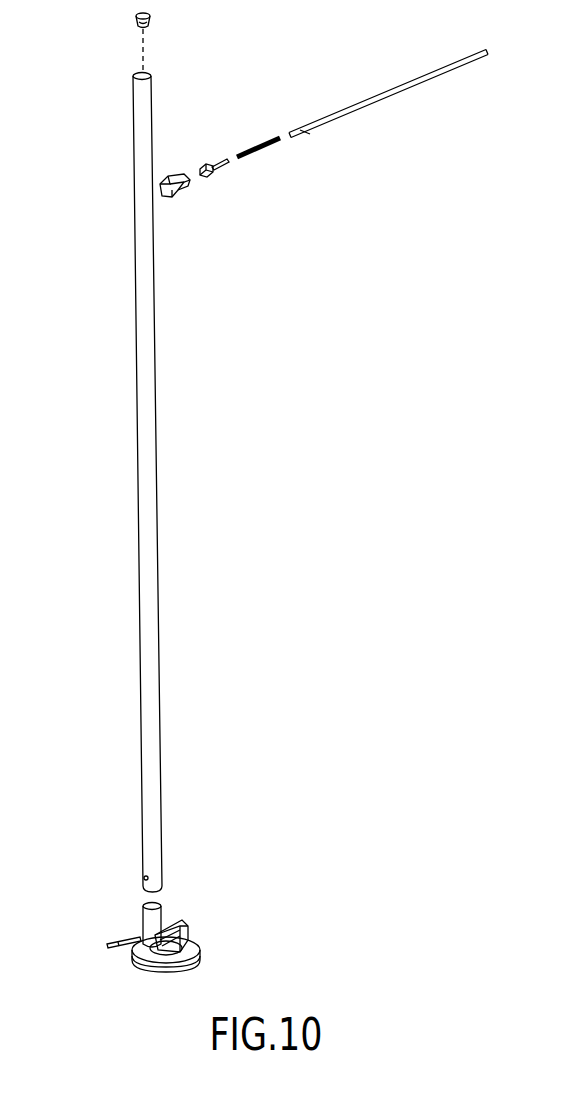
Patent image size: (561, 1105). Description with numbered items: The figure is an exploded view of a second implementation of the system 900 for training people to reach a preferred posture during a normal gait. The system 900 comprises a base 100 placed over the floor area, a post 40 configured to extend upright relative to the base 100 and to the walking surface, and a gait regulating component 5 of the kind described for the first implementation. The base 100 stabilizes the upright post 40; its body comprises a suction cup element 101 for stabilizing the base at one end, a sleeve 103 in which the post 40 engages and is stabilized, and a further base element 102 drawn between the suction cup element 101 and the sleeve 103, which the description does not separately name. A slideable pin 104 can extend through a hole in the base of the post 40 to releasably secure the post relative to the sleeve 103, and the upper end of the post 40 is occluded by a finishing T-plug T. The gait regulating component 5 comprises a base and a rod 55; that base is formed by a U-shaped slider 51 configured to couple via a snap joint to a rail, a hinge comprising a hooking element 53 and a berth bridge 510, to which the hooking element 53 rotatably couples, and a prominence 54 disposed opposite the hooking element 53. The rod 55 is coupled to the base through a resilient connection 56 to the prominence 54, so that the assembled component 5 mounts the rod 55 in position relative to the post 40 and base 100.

The finishing T-plug T is at (134, 20).
The post 40 is at (143, 417).
The U-shaped slider 51 is at (170, 173).
The hooking element 53 is at (205, 157).
The prominence 54 is at (220, 170).
The rod 55 is at (427, 82).
The resilient connection 56 is at (262, 153).
The gait regulating component 5 is at (368, 203).
The berth bridge 510 is at (190, 202).
The system 900 is at (222, 458).
The base 100 is at (168, 917).
The suction cup element 101 is at (208, 965).
The clamp block 102 is at (142, 958).
The sleeve 103 is at (150, 922).
The slideable pin 104 is at (112, 940).